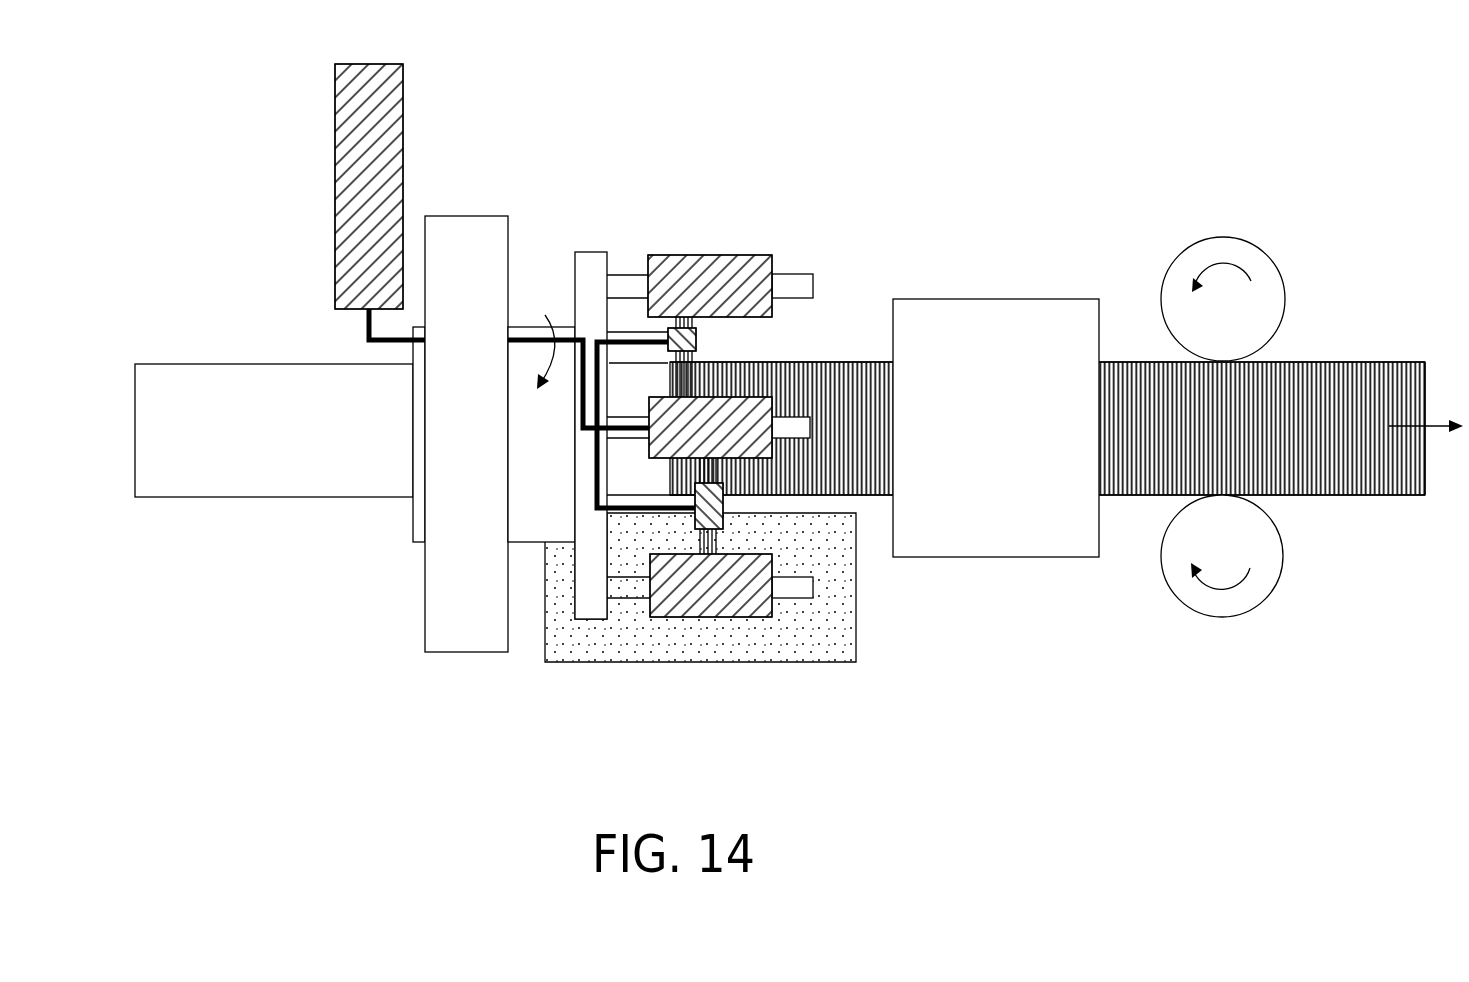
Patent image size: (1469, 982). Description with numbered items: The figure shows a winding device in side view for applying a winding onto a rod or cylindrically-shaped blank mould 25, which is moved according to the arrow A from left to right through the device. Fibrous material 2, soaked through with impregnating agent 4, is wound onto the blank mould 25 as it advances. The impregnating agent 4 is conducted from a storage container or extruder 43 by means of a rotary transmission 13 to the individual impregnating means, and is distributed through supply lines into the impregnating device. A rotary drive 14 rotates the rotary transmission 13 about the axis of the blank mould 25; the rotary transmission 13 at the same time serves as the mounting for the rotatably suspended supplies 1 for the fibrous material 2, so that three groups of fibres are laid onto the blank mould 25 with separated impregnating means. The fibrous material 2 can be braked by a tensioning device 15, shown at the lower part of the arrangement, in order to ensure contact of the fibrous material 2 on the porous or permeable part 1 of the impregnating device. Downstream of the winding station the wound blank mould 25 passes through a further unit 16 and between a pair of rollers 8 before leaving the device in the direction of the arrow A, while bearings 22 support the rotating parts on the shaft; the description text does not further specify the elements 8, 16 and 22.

The supplies for the fibrous material 1 is at (730, 262).
The fibrous material 2 is at (670, 375).
The impregnating agent 4 is at (528, 333).
The guide rollers 8 is at (1206, 251).
The rotary transmission 13 is at (593, 615).
The rotary drive 14 is at (480, 222).
The tensioning device 15 is at (777, 653).
The processing unit 16 is at (1028, 312).
The bearings 22 is at (698, 340).
The blank mould 25 is at (243, 485).
The storage container or extruder 43 is at (340, 183).
The arrow A is at (1435, 420).